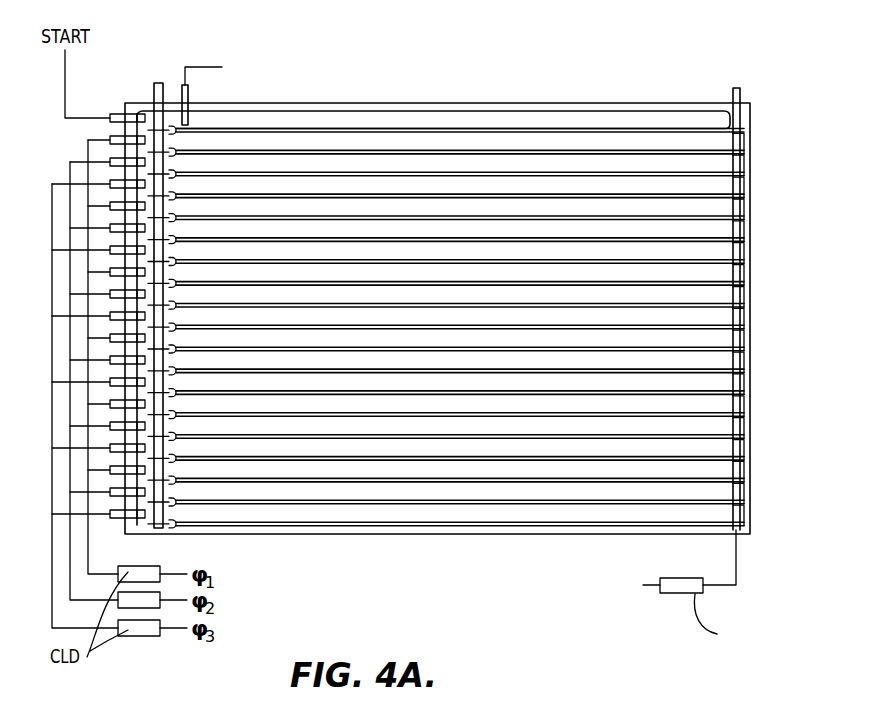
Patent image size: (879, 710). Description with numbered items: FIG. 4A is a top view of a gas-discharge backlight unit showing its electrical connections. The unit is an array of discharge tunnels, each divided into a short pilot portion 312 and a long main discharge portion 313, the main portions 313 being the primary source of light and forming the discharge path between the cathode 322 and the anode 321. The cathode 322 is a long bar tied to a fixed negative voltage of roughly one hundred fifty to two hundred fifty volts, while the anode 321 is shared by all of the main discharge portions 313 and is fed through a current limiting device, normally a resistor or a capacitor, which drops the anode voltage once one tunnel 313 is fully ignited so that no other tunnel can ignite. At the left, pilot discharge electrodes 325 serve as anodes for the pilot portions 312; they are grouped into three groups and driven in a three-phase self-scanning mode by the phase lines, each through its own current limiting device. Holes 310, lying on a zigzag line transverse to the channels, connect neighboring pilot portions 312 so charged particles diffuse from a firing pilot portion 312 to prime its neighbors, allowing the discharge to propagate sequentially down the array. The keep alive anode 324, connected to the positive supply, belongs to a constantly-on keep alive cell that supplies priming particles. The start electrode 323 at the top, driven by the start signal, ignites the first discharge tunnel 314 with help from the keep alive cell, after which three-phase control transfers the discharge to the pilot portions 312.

The holes 310 is at (140, 497).
The pilot portion 312 is at (140, 357).
The main discharge portion 313 is at (710, 141).
The discharge tunnel 314 is at (145, 117).
The anode 321 is at (740, 95).
The cathode 322 is at (165, 513).
The START electrode 323 is at (118, 113).
The keep alive anode 324 is at (188, 88).
The pilot discharge electrodes 325 is at (110, 138).